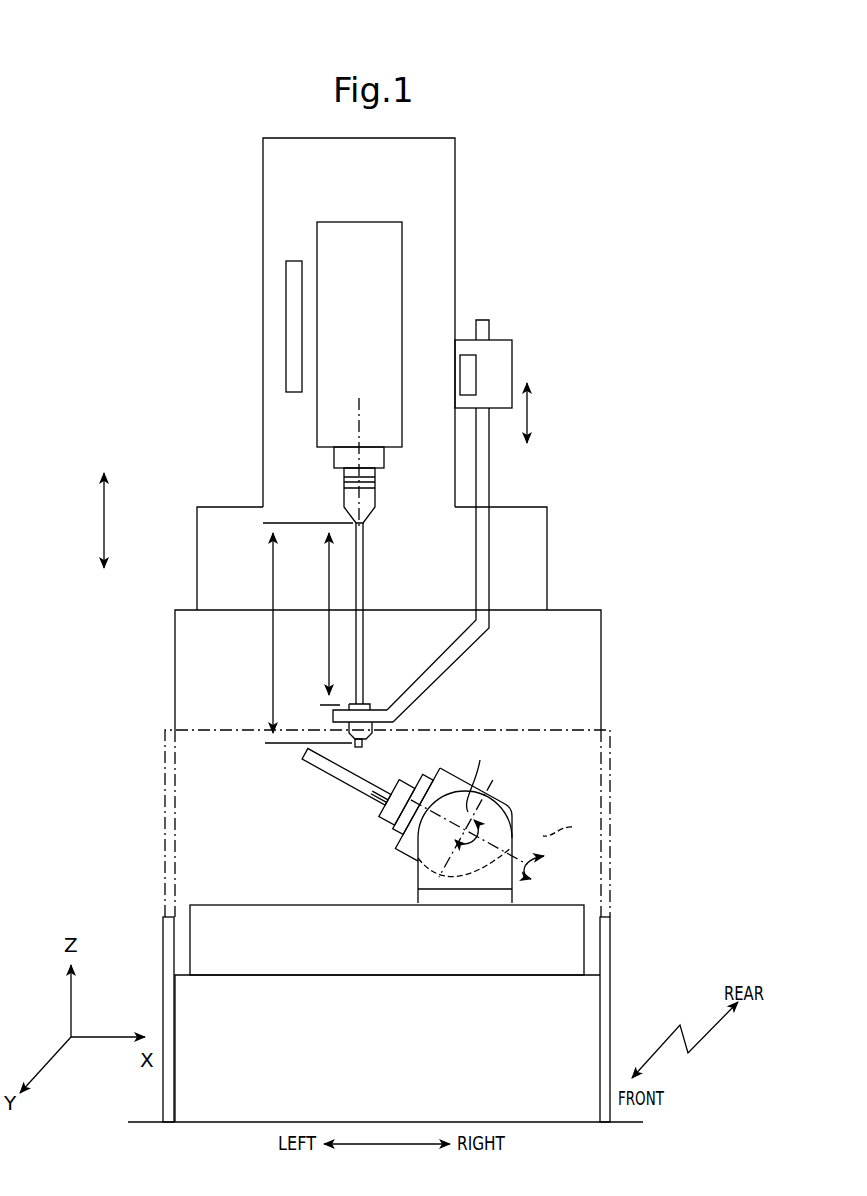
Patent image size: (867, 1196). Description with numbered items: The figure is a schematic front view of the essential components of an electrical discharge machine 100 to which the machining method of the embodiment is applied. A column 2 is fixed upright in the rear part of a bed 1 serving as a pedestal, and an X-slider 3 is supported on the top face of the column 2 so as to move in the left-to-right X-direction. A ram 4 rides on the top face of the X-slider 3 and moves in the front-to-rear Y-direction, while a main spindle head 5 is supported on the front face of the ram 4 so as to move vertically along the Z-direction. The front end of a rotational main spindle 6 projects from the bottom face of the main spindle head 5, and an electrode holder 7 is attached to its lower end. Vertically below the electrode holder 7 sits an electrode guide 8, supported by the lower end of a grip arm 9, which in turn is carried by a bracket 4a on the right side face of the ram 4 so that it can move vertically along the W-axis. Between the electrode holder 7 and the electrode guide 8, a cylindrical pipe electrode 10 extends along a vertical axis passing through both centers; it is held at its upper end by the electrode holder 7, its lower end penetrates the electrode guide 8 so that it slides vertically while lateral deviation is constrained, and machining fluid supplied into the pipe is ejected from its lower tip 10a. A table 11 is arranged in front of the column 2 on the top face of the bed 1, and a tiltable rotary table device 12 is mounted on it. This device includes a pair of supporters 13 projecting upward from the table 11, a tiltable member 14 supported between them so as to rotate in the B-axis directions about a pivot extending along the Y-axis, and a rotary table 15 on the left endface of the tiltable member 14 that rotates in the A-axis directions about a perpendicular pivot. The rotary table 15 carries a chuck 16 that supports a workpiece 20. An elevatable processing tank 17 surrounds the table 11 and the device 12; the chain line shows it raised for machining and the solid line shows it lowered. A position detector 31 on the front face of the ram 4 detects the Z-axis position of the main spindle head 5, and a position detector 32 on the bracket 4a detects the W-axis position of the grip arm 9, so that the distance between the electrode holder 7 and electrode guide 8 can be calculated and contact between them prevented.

The machine tool 100 is at (637, 215).
The bed 1 is at (560, 1022).
The column 2 is at (601, 632).
The X-slider 3 is at (547, 530).
The ram 4 is at (455, 216).
The bracket 4a is at (512, 363).
The main spindle head 5 is at (317, 242).
The rotational main spindle 6 is at (334, 460).
The electrode holder 7 is at (344, 497).
The electrode guide 8 is at (349, 735).
The grip arm 9 is at (489, 475).
The electrode 10 is at (363, 580).
The nozzle tip 10a is at (361, 743).
The table 11 is at (562, 952).
The tiltable rotary table device 12 is at (573, 779).
The supporters 13 is at (418, 873).
The tiltable member 14 is at (498, 792).
The rotary table 15 is at (402, 846).
The chuck 16 is at (385, 814).
The processing tank 17 is at (163, 940).
The workpiece 20 is at (310, 762).
The position detector 31 is at (286, 350).
The position detector 32 is at (476, 357).